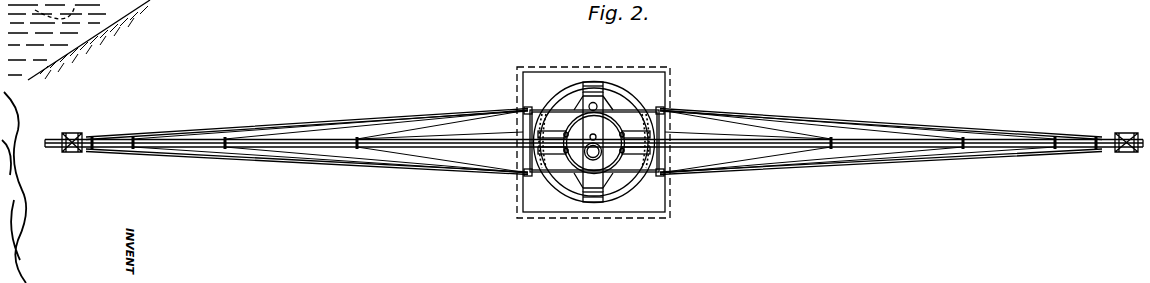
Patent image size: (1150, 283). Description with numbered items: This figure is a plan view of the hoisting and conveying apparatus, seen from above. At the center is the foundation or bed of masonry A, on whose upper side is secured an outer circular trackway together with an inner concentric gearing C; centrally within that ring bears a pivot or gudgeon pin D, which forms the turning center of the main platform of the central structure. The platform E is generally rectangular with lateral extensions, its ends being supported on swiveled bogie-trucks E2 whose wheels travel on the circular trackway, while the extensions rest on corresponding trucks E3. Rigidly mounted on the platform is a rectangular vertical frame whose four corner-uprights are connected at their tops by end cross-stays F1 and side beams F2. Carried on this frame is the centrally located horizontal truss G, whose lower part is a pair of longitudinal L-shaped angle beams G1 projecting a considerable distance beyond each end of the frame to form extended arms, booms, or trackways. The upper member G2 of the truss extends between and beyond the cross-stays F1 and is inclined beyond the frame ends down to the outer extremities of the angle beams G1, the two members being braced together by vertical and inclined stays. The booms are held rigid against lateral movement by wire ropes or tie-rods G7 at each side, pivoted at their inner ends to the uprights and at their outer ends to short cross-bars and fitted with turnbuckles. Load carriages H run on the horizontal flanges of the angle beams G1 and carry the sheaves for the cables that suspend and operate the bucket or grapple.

The foundation or bed of masonry A is at (604, 68).
The inner concentric gearing C is at (597, 143).
The pivot or gudgeon pin D is at (593, 142).
The platform E is at (594, 142).
The bogie-trucks E2 is at (598, 203).
The trucks beneath the extensions E3 is at (600, 87).
The end cross-stays F1 is at (526, 173).
The side beams F2 is at (553, 180).
The horizontal truss G is at (748, 147).
The longitudinal L-shaped angle beams G1 is at (423, 133).
The upper member of the truss G2 is at (428, 116).
The wire ropes or tie-rods G7 is at (892, 152).
The load carriage H is at (83, 139).